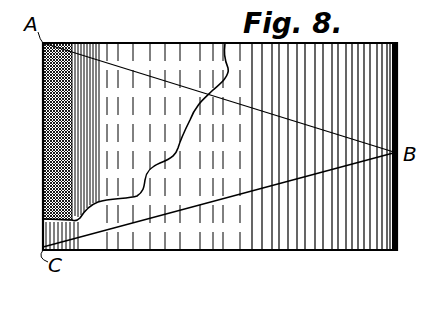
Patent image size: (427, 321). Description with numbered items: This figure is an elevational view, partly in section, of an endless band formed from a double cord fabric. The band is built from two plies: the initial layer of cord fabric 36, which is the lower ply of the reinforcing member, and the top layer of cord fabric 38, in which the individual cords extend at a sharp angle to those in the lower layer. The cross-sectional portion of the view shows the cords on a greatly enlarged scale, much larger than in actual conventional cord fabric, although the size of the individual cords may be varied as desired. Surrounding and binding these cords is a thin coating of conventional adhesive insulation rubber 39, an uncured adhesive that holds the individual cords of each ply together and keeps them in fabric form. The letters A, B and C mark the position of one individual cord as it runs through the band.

The initial layer of cord fabric 36 is at (72, 121).
The top layer of cord fabric 38 is at (43, 115).
The adhesive insulation rubber 39 is at (255, 238).